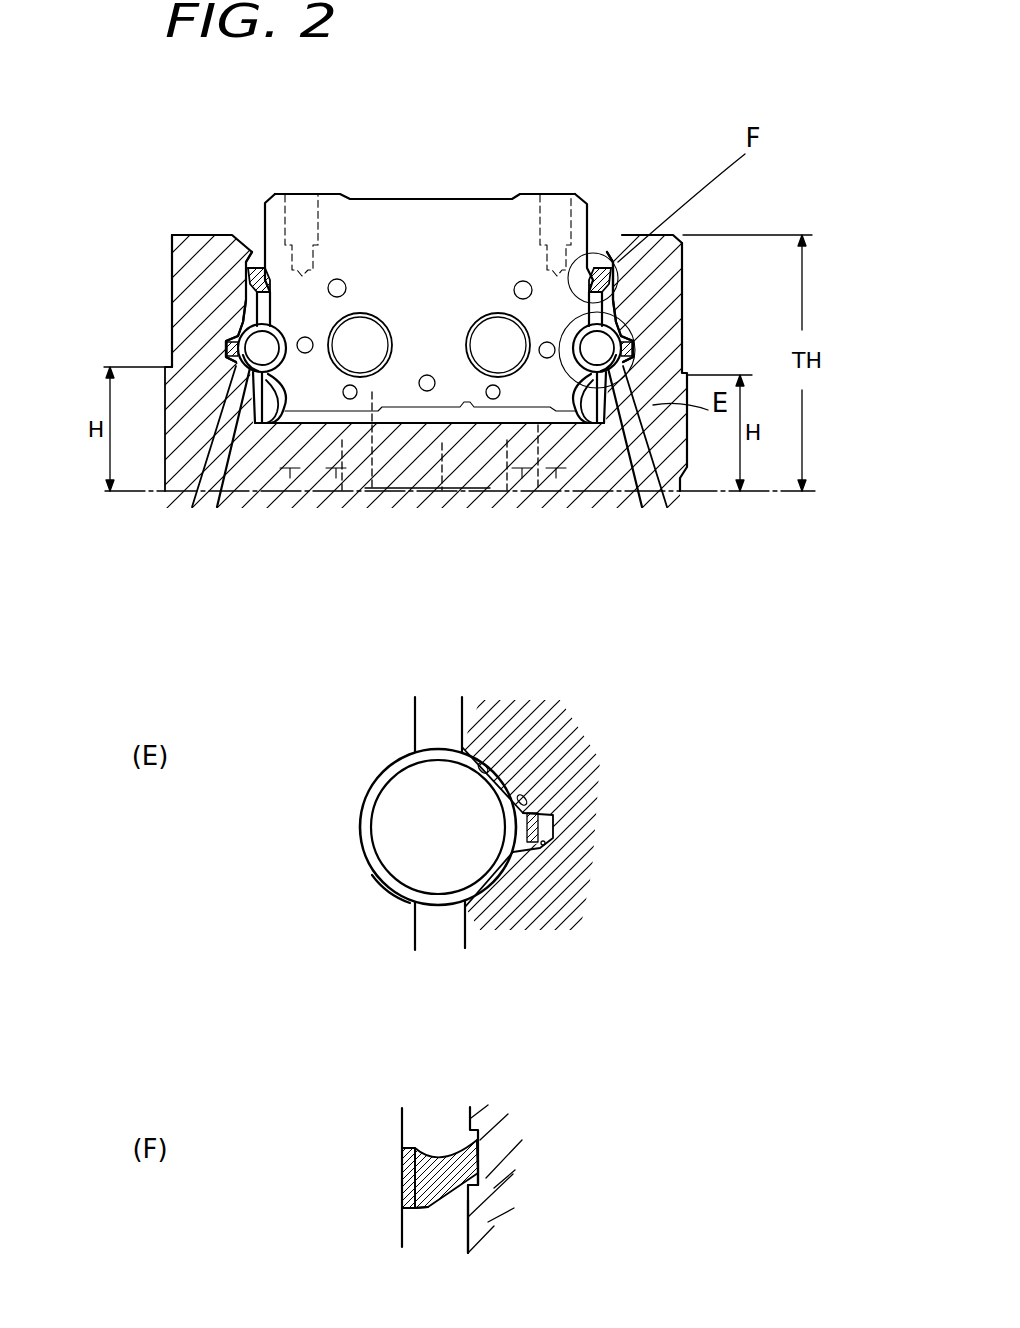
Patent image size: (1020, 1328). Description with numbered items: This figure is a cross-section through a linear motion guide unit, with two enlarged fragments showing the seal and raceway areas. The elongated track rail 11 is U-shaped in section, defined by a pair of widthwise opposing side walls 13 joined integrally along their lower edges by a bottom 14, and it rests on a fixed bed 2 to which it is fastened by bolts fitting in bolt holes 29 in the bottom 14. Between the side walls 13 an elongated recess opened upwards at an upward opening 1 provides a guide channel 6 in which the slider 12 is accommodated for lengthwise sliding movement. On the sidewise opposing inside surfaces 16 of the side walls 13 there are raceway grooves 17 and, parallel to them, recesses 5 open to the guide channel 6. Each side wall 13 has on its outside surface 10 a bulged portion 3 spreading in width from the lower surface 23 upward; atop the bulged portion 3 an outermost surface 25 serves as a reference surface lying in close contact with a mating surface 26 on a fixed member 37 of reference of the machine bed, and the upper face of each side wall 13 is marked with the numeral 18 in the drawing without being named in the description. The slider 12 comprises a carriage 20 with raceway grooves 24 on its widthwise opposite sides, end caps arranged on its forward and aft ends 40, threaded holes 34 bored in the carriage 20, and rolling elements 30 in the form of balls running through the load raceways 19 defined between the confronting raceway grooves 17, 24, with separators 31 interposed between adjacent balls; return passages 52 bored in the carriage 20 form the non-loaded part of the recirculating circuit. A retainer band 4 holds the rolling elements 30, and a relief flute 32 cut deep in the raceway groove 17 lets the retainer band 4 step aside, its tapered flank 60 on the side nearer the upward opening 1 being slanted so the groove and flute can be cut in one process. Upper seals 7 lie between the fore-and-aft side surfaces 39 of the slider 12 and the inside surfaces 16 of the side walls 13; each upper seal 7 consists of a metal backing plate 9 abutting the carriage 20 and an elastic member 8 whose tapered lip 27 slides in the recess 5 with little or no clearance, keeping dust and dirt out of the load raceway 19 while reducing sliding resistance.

The upward opening 1 is at (594, 252).
The fixed bed 2 is at (465, 547).
The bulged portion 3 is at (235, 375).
The retainer band 4 is at (226, 349).
The recess 5 is at (242, 322).
The guide channel 6 is at (372, 392).
The upper seal 7 is at (272, 197).
The elastic member 8 is at (258, 265).
The metal backing plate 9 is at (403, 1160).
The outside surface 10 is at (172, 277).
The track rail 11 is at (690, 275).
The slider 12 is at (437, 193).
The side wall 13 is at (180, 234).
The bottom 14 is at (460, 407).
The inside surface 16 is at (588, 312).
The raceway groove 17 is at (248, 385).
The block top face 18 is at (206, 233).
The load raceway 19 is at (287, 425).
The carriage 20 is at (382, 222).
The lower surface 23 is at (626, 395).
The raceway groove 24 is at (578, 378).
The outermost surface 25 is at (165, 400).
The mating surface 26 is at (165, 430).
The lip 27 is at (480, 1143).
The bolt holes 29 is at (344, 440).
The rolling elements 30 is at (378, 792).
The separator 31 is at (420, 828).
The relief flute 32 is at (232, 360).
The threaded holes 34 is at (344, 285).
The fixed member 37 is at (163, 402).
The side surface 39 is at (640, 327).
The forward and aft ends 40 is at (465, 235).
The return passage 52 is at (348, 359).
The tapered flank 60 is at (553, 785).